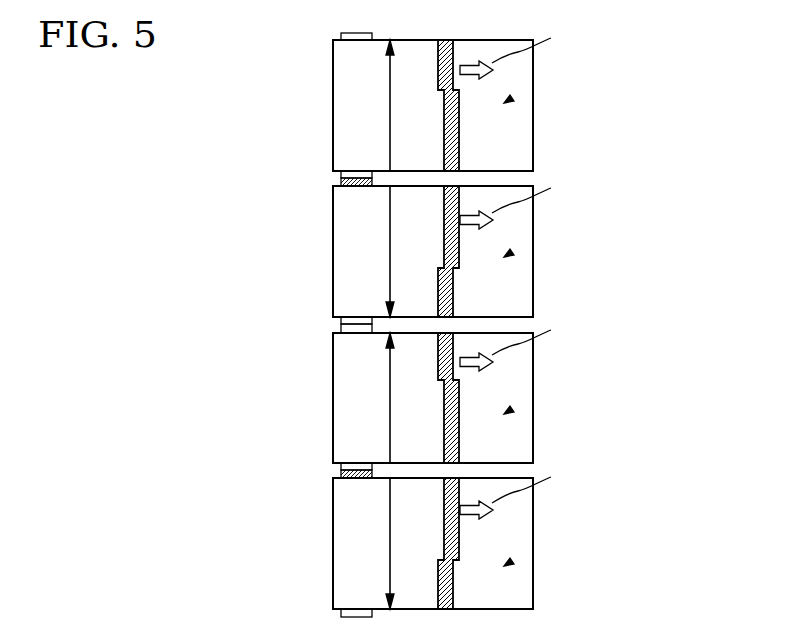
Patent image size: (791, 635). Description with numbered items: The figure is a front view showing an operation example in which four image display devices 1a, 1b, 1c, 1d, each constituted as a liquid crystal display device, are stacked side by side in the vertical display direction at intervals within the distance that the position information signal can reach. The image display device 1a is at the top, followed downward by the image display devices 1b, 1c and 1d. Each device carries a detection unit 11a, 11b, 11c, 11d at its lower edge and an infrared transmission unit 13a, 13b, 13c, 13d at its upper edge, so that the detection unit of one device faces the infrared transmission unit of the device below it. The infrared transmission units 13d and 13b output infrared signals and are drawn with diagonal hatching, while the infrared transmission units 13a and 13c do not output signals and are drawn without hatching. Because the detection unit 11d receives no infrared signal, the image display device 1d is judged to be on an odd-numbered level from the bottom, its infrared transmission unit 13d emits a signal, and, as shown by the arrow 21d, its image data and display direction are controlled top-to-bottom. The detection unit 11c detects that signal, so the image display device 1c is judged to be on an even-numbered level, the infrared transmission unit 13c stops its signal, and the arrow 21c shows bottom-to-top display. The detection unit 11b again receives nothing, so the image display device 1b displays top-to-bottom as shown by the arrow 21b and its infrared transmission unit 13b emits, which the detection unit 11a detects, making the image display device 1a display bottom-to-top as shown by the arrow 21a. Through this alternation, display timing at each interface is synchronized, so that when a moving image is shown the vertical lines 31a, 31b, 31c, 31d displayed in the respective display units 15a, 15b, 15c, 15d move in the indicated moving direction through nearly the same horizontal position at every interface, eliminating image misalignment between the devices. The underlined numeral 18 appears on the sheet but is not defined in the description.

The image display device 1a is at (490, 100).
The image display device 1b is at (490, 248).
The image display device 1c is at (490, 392).
The image display device 1d is at (490, 539).
The detection unit 11a is at (341, 174).
The detection unit 11b is at (341, 320).
The detection unit 11c is at (341, 467).
The detection unit 11d is at (341, 613).
The infrared transmission unit 13a is at (341, 36).
The infrared transmission unit 13b is at (341, 182).
The infrared transmission unit 13c is at (341, 328).
The infrared transmission unit 13d is at (341, 474).
The display unit 15a is at (511, 100).
The display unit 15b is at (511, 254).
The display unit 15c is at (511, 411).
The display unit 15d is at (511, 563).
The arrow 21a is at (389, 102).
The arrow 21b is at (389, 246).
The arrow 21c is at (389, 392).
The arrow 21d is at (389, 539).
The vertical line 31a is at (443, 102).
The vertical line 31b is at (443, 246).
The vertical line 31c is at (443, 392).
The vertical line 31d is at (443, 539).
The stacked unit assembly 18 is at (497, 319).